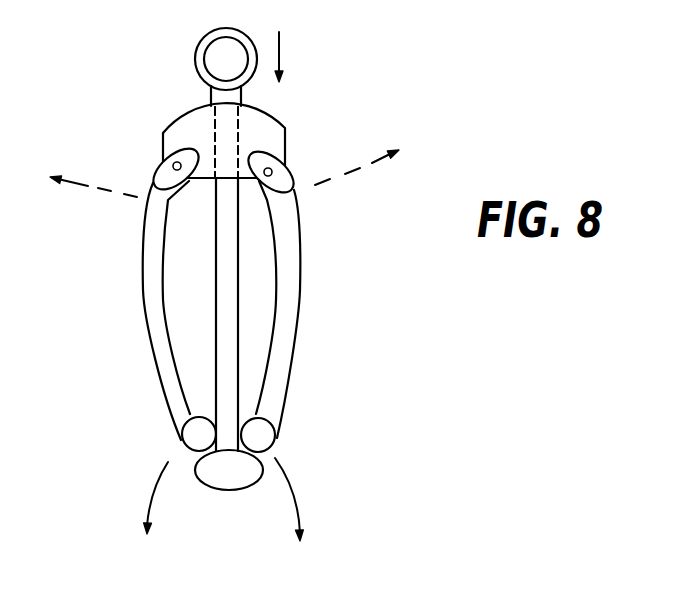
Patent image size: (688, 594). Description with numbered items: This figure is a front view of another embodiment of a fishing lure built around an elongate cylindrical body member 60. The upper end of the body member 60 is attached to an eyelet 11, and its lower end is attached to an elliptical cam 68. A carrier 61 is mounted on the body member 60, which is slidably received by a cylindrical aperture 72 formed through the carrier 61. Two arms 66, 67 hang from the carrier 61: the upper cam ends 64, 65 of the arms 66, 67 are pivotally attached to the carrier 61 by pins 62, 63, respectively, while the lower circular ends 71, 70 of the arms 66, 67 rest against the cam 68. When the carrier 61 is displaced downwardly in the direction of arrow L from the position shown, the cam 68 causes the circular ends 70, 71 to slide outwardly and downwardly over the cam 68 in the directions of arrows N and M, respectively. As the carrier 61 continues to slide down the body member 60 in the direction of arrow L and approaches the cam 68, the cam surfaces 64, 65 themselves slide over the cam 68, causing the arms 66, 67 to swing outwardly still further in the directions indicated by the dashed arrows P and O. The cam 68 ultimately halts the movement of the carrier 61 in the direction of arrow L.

The eyelet 11 is at (222, 26).
The elongate cylindrical body member 60 is at (227, 275).
The carrier 61 is at (167, 134).
The pin 62 is at (172, 170).
The pin 63 is at (287, 168).
The upper cam end 64 is at (196, 142).
The upper cam end 65 is at (253, 142).
The arm 66 is at (139, 324).
The arm 67 is at (304, 331).
The elliptical cam 68 is at (218, 482).
The lower circular end 70 is at (260, 435).
The lower circular end 71 is at (185, 434).
The cylindrical aperture 72 is at (193, 107).
The arrow L is at (280, 52).
The dashed arrow O is at (107, 190).
The dashed arrow P is at (352, 172).
The arrow M is at (150, 502).
The arrow N is at (293, 483).